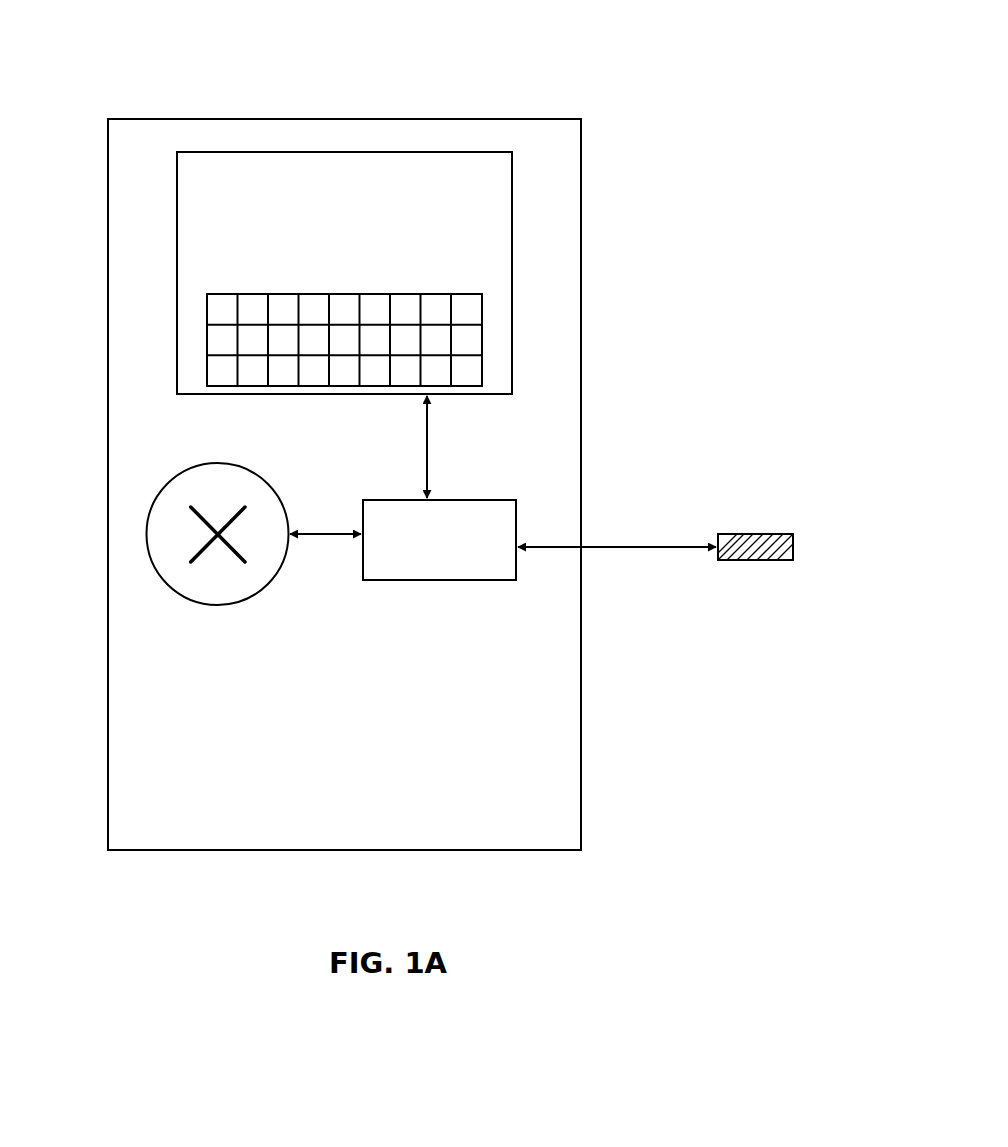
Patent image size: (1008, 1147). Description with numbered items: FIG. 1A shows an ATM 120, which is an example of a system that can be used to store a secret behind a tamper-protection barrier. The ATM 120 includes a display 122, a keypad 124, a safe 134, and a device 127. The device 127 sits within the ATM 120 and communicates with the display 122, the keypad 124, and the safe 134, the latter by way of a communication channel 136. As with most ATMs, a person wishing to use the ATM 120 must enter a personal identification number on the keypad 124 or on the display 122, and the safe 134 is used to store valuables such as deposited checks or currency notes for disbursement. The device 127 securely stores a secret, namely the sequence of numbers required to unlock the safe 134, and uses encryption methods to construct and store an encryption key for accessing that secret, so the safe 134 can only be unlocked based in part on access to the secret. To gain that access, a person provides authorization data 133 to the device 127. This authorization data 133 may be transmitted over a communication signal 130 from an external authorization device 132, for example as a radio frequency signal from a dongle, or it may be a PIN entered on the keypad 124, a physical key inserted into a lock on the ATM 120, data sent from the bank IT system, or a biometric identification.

The ATM 120 is at (555, 118).
The display 122 is at (512, 240).
The keypad 124 is at (482, 330).
The device 127 is at (463, 498).
The communication signal 130 is at (602, 543).
The authorization device 132 is at (743, 560).
The authorization data 133 is at (816, 616).
The safe 134 is at (155, 498).
The communication channel 136 is at (320, 532).